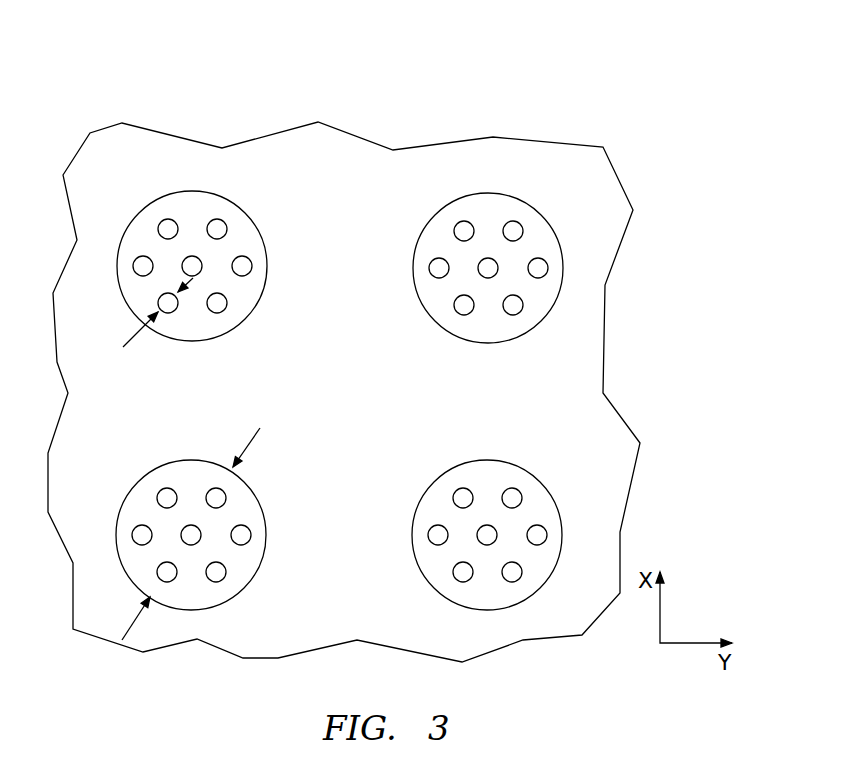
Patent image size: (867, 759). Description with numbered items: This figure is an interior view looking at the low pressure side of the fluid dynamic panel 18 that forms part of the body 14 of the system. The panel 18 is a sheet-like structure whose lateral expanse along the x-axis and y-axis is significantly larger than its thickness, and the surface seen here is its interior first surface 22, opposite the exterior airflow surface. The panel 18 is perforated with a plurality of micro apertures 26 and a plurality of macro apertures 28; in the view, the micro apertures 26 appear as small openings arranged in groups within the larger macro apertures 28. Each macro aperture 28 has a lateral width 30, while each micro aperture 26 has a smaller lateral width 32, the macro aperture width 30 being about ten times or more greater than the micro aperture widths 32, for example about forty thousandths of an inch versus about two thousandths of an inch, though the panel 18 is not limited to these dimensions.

The body 14 is at (373, 370).
The fluid dynamic panel 18 is at (373, 416).
The interior first surface 22 is at (602, 178).
The micro apertures 26 is at (168, 224).
The macro apertures 28 is at (248, 238).
The lateral width of macro aperture 30 is at (127, 636).
The lateral widths of micro apertures 32 is at (123, 347).